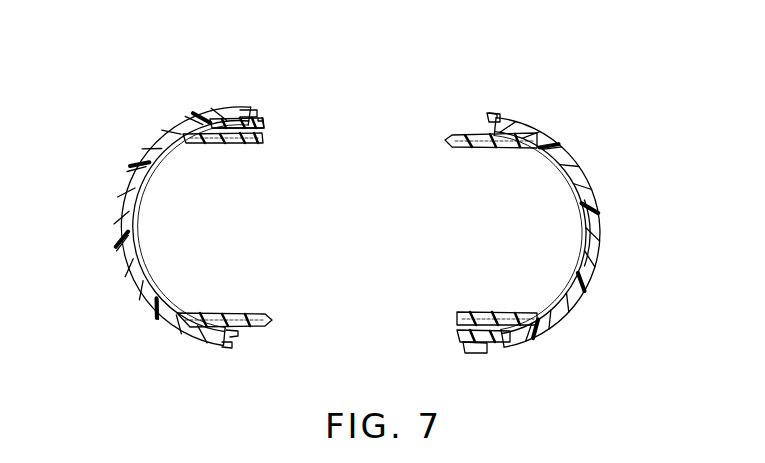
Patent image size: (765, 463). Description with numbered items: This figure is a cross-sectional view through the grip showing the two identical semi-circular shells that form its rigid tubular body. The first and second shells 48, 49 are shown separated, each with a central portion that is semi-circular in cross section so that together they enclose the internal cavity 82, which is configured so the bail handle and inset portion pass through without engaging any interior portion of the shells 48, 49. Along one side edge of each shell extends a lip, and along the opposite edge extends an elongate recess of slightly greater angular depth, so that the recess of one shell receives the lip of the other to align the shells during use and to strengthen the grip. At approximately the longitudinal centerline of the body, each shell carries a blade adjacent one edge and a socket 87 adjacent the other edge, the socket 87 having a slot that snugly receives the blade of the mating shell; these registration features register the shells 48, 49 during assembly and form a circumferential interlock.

The first elongate shell 48 is at (597, 191).
The second elongate shell 49 is at (128, 266).
The internal cavity 82 is at (586, 247).
The socket 87 is at (240, 144).